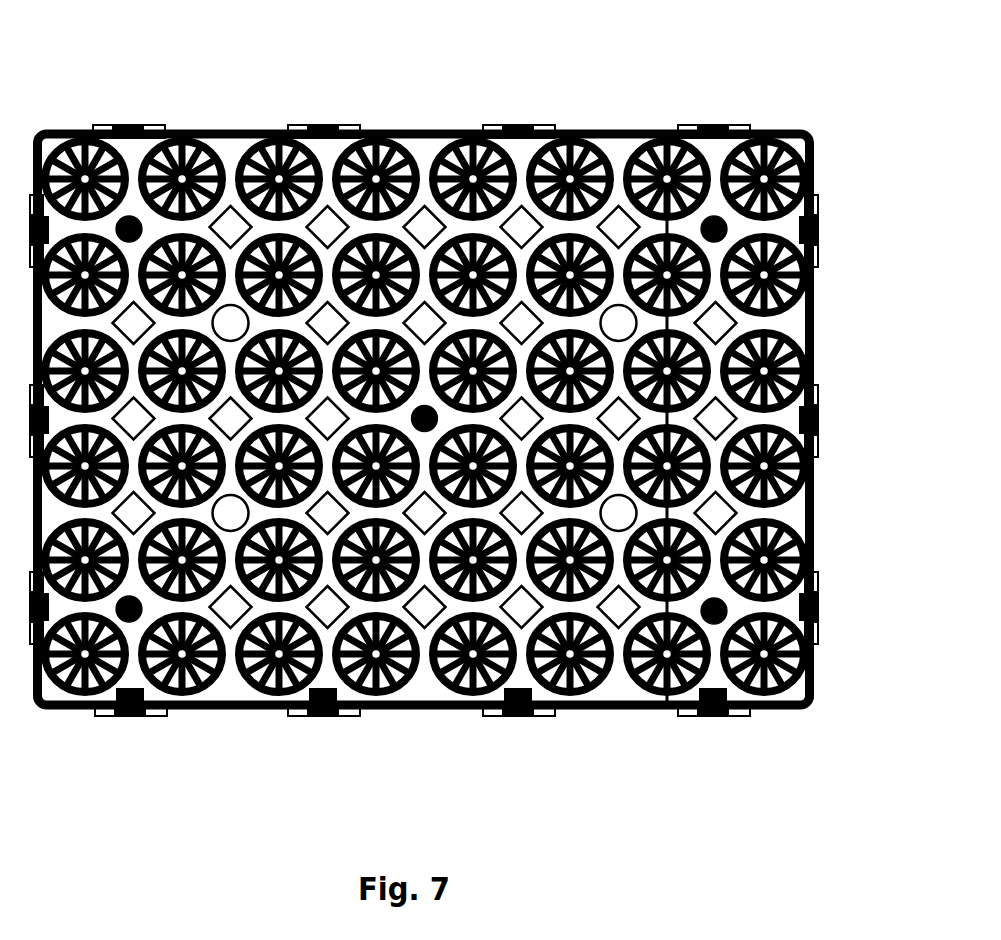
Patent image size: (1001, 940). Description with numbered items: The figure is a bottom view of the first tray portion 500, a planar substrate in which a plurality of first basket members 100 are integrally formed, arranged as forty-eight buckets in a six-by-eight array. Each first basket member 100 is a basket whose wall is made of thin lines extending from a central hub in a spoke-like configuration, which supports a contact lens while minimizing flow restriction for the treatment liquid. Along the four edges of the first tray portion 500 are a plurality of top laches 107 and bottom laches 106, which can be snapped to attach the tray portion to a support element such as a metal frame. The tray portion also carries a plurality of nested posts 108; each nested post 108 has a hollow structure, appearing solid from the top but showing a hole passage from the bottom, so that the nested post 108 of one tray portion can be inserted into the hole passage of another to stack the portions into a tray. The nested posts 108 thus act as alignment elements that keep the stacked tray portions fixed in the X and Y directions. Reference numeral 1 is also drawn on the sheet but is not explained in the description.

The storm water management module 1 is at (618, 688).
The first basket member 100 is at (272, 130).
The bottom laches 106 is at (818, 443).
The top laches 107 is at (822, 410).
The nested posts 108 is at (167, 130).
The first tray portion 500 is at (824, 323).